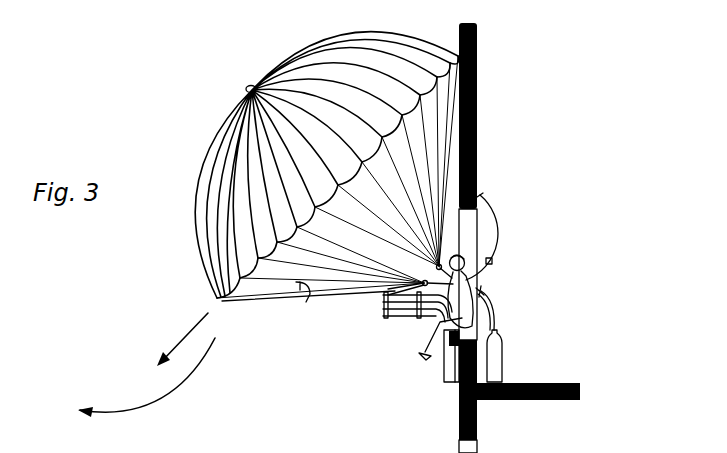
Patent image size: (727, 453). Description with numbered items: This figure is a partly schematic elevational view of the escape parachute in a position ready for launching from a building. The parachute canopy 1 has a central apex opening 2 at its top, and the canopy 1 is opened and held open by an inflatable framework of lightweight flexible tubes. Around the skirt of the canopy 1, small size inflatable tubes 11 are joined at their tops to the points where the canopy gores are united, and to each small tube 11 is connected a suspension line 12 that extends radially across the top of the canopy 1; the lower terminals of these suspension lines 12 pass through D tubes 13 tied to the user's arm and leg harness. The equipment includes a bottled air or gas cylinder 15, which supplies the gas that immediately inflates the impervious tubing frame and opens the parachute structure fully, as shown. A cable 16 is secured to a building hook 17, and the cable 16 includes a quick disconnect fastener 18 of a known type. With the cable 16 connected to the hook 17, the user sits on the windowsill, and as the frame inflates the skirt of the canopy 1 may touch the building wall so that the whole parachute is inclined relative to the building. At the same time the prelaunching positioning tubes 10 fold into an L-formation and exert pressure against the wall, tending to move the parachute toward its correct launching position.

The parachute canopy 1 is at (216, 209).
The central apex opening 2 is at (252, 84).
The prelaunching positioning tubes 10 is at (408, 313).
The small size inflatable tubes 11 is at (304, 283).
The suspension line 12 is at (286, 294).
The D tubes 13 is at (390, 293).
The bottled air or gas cylinder 15 is at (497, 358).
The cable 16 is at (495, 223).
The building hook 17 is at (481, 194).
The quick disconnect fastener 18 is at (491, 262).